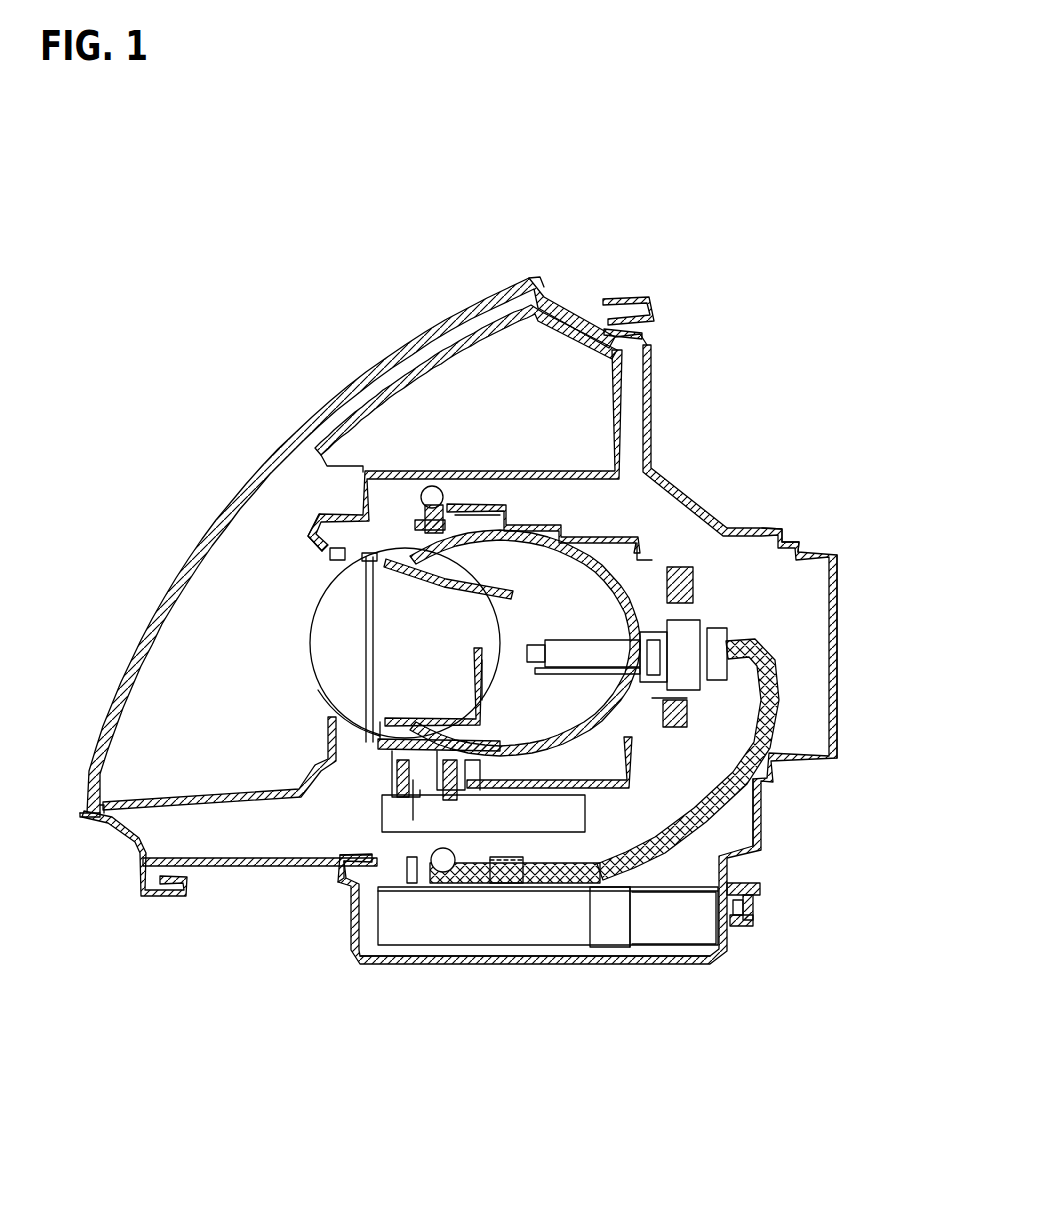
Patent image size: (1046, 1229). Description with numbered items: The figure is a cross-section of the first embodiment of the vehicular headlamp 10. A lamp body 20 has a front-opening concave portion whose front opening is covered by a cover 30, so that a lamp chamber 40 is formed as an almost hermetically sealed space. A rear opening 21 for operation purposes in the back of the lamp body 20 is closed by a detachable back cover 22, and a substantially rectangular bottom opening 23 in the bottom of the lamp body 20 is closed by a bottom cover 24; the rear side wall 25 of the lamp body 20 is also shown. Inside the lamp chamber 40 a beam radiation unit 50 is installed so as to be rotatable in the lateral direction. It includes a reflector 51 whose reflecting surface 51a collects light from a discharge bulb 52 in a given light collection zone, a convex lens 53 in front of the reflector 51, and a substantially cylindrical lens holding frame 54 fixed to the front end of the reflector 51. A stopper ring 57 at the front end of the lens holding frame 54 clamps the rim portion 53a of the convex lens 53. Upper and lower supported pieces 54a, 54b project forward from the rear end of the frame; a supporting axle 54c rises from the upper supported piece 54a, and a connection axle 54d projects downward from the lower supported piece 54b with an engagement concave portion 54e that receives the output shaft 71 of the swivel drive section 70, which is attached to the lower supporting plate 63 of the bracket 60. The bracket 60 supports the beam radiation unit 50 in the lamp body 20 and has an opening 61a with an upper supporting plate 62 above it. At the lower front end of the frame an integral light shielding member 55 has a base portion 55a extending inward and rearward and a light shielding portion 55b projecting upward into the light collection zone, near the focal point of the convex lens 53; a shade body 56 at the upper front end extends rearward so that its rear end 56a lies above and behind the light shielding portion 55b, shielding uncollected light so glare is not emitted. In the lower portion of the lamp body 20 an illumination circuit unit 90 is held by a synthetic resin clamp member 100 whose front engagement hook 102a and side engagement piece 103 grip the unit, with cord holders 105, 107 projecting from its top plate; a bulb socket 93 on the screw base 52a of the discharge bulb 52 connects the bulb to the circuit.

The vehicular headlamp 10 is at (293, 317).
The lamp body 20 is at (656, 398).
The rear opening 21 is at (806, 562).
The back cover 22 is at (838, 612).
The bottom opening 23 is at (713, 903).
The bottom cover 24 is at (627, 962).
The rear side wall 25 is at (760, 822).
The cover 30 is at (168, 584).
The lamp chamber 40 is at (247, 832).
The beam radiation unit 50 is at (640, 583).
The reflector 51 is at (615, 738).
The reflecting surface 51a is at (600, 548).
The discharge bulb 52 is at (583, 640).
The screw base 52a is at (703, 620).
The convex lens 53 is at (320, 645).
The rim portion 53a is at (327, 730).
The lens holding frame 54 is at (387, 503).
The upper supported piece 54a is at (490, 506).
The lower supported piece 54b is at (270, 832).
The supporting axle 54c is at (432, 486).
The connection axle 54d is at (287, 838).
The engagement concave portion 54e is at (417, 800).
The light shielding member 55 is at (483, 717).
The base portion 55a is at (333, 722).
The light shielding portion 55b is at (483, 676).
The shade body 56 is at (364, 582).
The rear end 56a is at (508, 600).
The stopper ring 57 is at (340, 517).
The bracket 60 is at (608, 782).
The opening 61a is at (652, 548).
The upper supporting plate 62 is at (582, 470).
The lower supporting plate 63 is at (545, 800).
The swivel drive section 70 is at (312, 880).
The output shaft 71 is at (318, 866).
The illumination circuit unit 90 is at (705, 935).
The bulb socket 93 is at (722, 676).
The clamp member 100 is at (667, 885).
The engagement hook 102a is at (392, 960).
The side engagement piece 103 is at (600, 940).
The cord holder 105 is at (432, 875).
The cord holder 107 is at (505, 857).